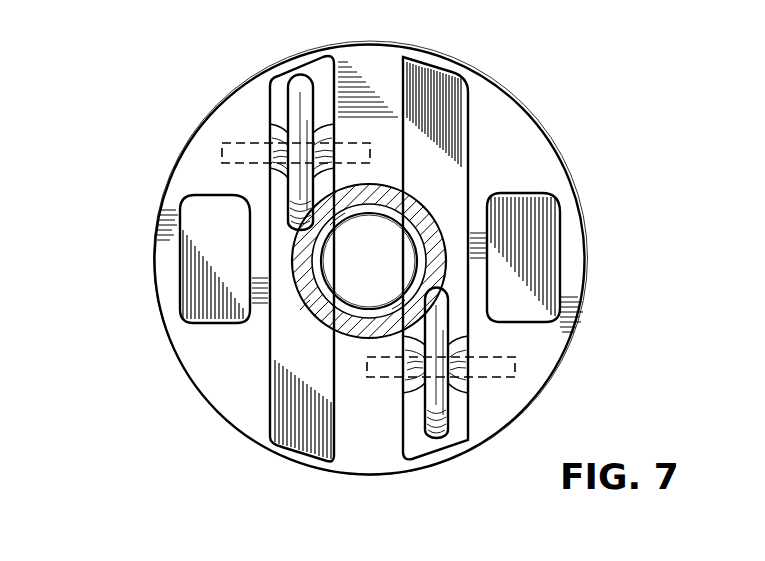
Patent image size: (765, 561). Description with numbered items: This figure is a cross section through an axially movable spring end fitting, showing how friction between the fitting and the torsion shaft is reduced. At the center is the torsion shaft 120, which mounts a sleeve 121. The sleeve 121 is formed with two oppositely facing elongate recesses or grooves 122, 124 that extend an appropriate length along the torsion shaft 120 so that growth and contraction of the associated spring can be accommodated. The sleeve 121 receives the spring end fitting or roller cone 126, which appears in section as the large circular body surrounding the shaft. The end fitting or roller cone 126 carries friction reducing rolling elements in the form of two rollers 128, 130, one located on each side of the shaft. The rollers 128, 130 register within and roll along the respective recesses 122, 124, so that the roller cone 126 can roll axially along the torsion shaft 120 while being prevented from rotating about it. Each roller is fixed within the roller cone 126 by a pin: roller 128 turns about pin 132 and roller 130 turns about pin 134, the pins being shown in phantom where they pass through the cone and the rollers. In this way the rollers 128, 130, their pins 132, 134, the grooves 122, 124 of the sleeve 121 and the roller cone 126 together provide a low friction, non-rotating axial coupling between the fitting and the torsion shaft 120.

The torsion shaft 120 is at (325, 245).
The sleeve 121 is at (303, 308).
The recess or groove 122 is at (398, 188).
The recess or groove 124 is at (358, 322).
The end fitting or roller cone 126 is at (150, 288).
The roller 128 is at (298, 82).
The roller 130 is at (440, 436).
The pin 132 is at (222, 152).
The pin 134 is at (515, 367).